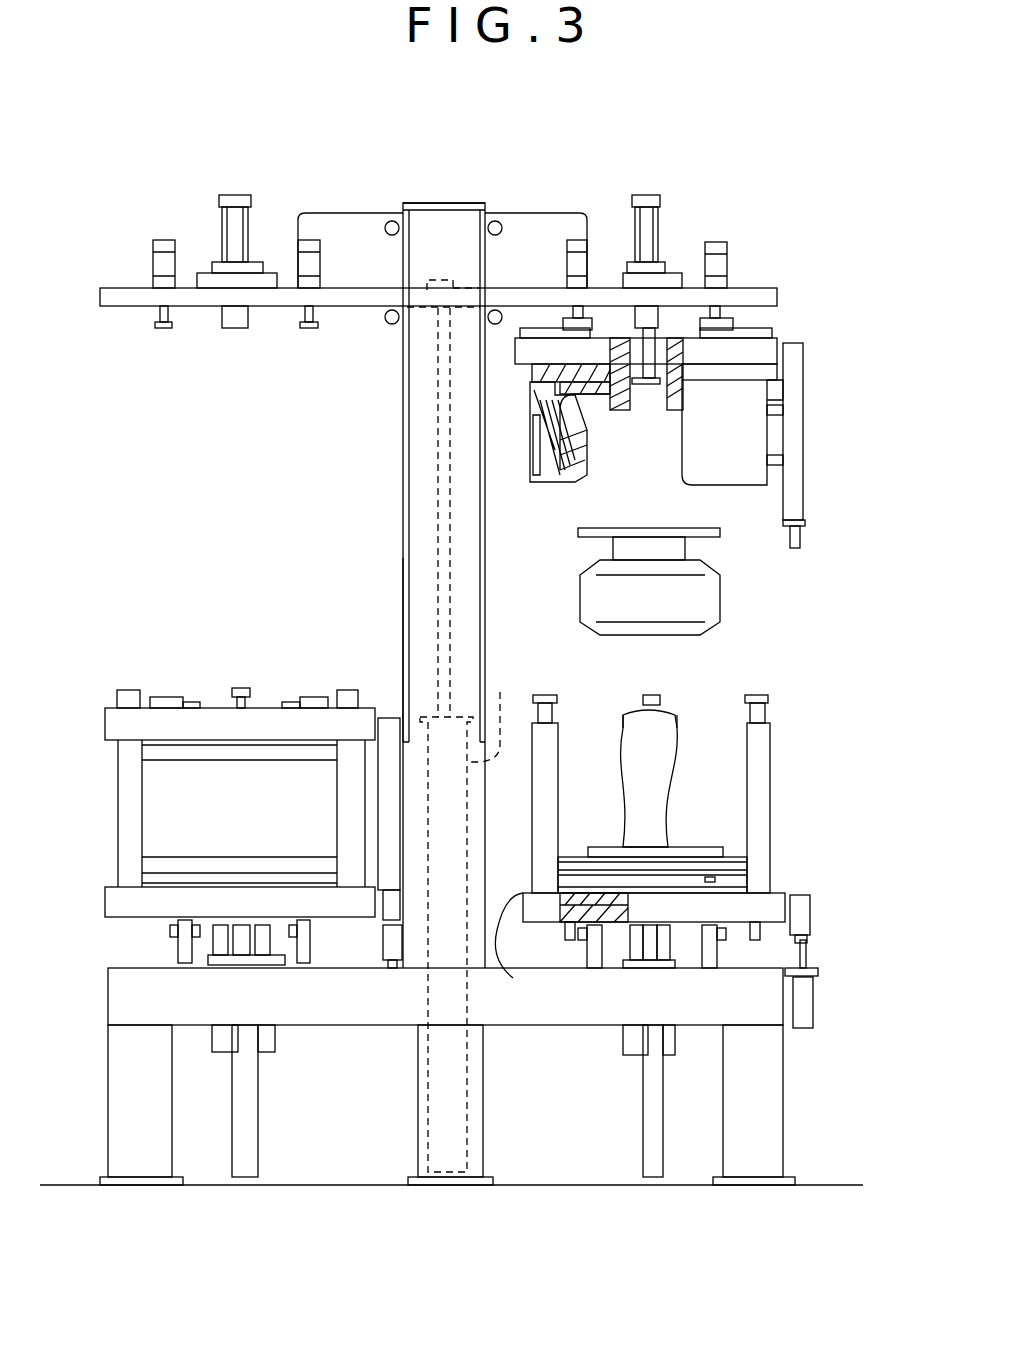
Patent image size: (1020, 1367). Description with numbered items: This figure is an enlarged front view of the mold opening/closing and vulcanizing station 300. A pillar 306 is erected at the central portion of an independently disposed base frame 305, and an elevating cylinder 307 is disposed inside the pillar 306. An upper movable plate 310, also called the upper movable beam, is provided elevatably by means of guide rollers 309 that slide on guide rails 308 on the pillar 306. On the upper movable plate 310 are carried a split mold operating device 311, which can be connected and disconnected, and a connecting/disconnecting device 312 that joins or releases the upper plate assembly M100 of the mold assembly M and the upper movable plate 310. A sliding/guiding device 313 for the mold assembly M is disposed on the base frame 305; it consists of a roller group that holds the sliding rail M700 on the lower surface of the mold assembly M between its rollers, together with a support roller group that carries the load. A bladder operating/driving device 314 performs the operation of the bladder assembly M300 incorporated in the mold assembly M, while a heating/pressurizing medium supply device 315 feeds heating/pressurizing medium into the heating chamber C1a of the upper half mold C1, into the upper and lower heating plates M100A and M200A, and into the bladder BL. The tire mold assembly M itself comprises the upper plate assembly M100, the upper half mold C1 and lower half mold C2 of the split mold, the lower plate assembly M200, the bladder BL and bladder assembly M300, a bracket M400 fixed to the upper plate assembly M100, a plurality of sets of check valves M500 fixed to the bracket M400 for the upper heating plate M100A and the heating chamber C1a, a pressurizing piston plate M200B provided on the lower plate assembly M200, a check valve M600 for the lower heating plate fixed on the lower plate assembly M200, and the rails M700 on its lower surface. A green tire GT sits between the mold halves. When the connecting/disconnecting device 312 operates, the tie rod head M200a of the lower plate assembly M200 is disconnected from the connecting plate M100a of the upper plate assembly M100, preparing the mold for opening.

The mold opening/closing and vulcanizing station 300 is at (476, 202).
The base frame 305 is at (110, 1000).
The pillar 306 is at (415, 445).
The elevating cylinder 307 is at (507, 714).
The guide rails 308 is at (403, 558).
The guide rollers 309 is at (388, 325).
The upper movable plate 310 is at (752, 288).
The split mold operating device 311 is at (235, 195).
The connecting/disconnecting device 312 is at (163, 240).
The sliding/guiding device 313 is at (178, 940).
The bladder operating/driving device 314 is at (262, 1105).
The heating/pressurizing medium supply device 315 is at (392, 962).
The tire mold assembly M is at (116, 815).
The upper plate assembly M100 is at (512, 368).
The connecting plate M100a is at (760, 330).
The upper heating plate M100A is at (715, 385).
The bracket M400 is at (803, 372).
The check valves M500 is at (800, 548).
The upper half mold C1 is at (715, 478).
The heating chamber C1a is at (540, 455).
The green tire GT is at (720, 605).
The lower heating plate M200A is at (577, 893).
The bladder assembly M300 is at (645, 685).
The tie rod head M200a is at (768, 698).
The bladder BL is at (668, 775).
The lower half mold C2 is at (700, 855).
The lower plate assembly M200 is at (757, 898).
The sliding rail M700 is at (790, 900).
The check valve M600 is at (807, 940).
The pressurizing piston plate M200B is at (544, 955).